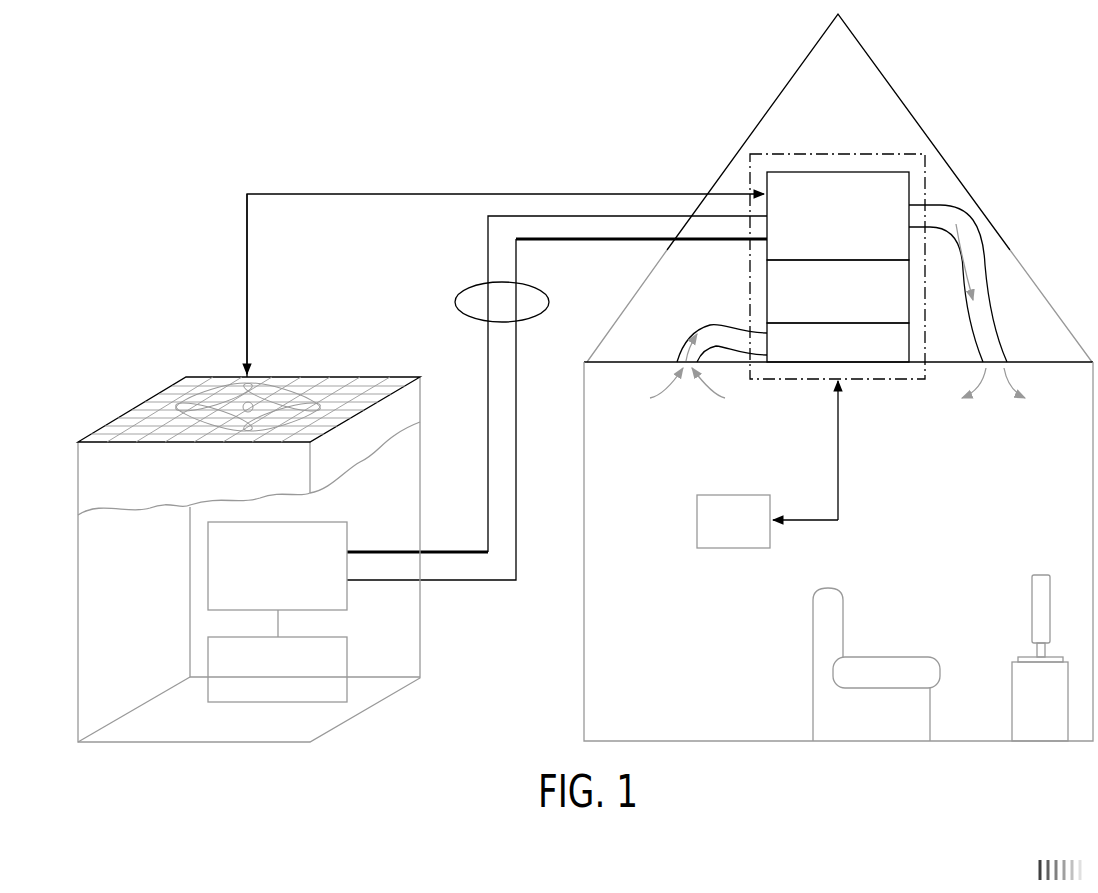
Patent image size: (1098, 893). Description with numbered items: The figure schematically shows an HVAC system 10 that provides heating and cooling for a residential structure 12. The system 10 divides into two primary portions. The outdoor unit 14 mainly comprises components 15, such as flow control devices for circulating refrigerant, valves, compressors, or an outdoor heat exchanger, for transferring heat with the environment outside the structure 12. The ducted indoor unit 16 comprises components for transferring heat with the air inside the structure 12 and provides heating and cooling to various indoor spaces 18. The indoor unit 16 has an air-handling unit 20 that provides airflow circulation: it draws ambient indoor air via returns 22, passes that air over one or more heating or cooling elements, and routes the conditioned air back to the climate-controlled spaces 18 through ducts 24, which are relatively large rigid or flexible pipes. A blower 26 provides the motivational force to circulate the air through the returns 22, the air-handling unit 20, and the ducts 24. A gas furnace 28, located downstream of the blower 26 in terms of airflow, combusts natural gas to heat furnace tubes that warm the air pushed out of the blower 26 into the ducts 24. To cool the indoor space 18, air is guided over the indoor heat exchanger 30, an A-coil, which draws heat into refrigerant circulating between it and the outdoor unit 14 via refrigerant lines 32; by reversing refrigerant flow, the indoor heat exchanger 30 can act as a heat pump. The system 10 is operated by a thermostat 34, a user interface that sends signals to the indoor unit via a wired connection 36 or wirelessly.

The HVAC system 10 is at (344, 120).
The residential structure 12 is at (1030, 275).
The outdoor unit 14 is at (120, 396).
The components 15 is at (208, 566).
The indoor unit 16 is at (882, 138).
The indoor spaces 18 is at (945, 503).
The air-handling unit 20 is at (928, 185).
The returns 22 is at (689, 345).
The ducts 24 is at (985, 293).
The blower 26 is at (909, 343).
The gas furnace 28 is at (767, 292).
The indoor heat exchanger 30 is at (838, 170).
The refrigerant lines 32 is at (463, 292).
The thermostat 34 is at (733, 495).
The wired connection 36 is at (838, 488).